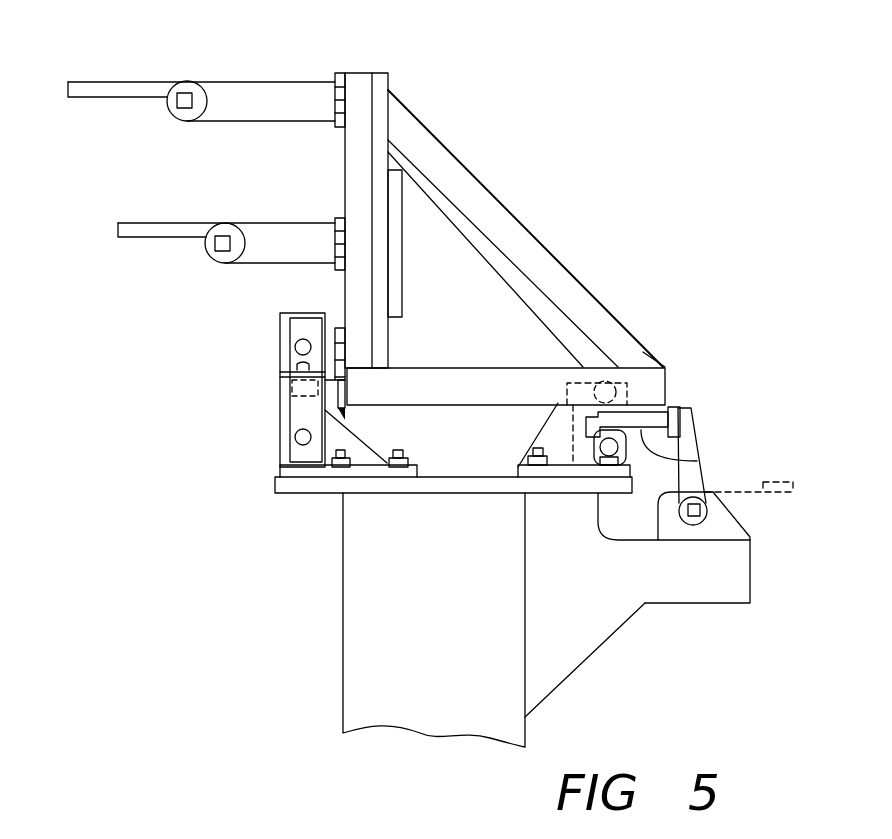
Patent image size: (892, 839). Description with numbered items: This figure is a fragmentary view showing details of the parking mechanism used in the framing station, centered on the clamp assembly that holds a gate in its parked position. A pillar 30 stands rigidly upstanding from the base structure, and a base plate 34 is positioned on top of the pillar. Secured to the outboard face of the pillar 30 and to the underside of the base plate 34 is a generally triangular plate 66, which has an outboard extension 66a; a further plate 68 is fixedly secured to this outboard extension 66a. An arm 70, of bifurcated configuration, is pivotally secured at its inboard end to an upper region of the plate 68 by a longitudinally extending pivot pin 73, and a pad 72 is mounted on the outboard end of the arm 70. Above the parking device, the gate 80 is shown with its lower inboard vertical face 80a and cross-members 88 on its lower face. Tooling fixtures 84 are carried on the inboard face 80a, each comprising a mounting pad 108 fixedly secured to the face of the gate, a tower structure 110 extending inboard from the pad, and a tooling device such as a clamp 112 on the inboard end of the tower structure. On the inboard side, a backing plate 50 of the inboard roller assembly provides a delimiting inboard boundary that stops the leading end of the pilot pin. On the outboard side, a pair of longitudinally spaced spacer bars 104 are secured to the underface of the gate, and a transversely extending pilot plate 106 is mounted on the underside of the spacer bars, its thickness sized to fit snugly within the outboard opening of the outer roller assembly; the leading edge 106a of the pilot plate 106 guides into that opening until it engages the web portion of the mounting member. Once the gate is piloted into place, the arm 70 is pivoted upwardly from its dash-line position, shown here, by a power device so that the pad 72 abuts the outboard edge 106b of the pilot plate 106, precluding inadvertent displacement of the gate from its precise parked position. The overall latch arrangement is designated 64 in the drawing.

The pillar 30 is at (447, 697).
The base plate 34 is at (377, 497).
The backing plate 50 is at (281, 423).
The latch assembly 64 is at (627, 503).
The plate 66 is at (637, 605).
The outboard extension 66a is at (705, 592).
The plate 68 is at (667, 503).
The arm 70 is at (697, 443).
The pad 72 is at (715, 455).
The pivot pin 73 is at (690, 508).
The gate 80 is at (488, 183).
The inboard vertical face 80a is at (363, 122).
The tooling fixture 84 is at (193, 197).
The cross-member 88 is at (410, 378).
The spacer bar 104 is at (639, 378).
The pilot plate 106 is at (700, 461).
The leading edge 106a is at (578, 424).
The outboard edge 106b is at (700, 418).
The mounting pad 108 is at (337, 72).
The tower structure 110 is at (213, 108).
The clamp 112 is at (93, 102).